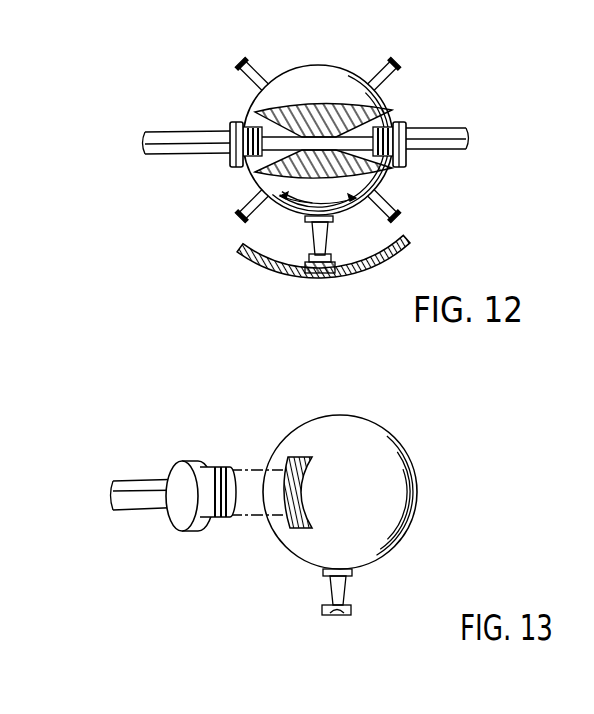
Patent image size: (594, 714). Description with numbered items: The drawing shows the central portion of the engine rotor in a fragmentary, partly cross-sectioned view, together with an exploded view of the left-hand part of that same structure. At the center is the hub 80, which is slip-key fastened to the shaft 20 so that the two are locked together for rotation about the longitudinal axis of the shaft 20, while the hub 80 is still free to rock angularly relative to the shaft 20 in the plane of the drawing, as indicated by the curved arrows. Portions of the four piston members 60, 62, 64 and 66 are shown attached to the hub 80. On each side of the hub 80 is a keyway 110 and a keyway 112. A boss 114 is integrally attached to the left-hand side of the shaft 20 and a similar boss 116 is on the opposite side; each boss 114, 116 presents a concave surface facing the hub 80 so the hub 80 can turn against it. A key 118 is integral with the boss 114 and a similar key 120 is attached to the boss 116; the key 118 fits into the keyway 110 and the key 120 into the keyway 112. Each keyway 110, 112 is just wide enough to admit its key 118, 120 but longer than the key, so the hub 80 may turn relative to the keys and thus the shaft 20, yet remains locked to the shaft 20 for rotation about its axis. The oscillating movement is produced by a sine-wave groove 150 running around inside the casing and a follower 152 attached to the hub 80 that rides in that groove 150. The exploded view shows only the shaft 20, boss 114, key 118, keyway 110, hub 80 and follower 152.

In FIG. 12, the shaft 20 is at (165, 140).
In FIG. 13, the shaft 20 is at (135, 490).
In FIG. 12, the piston member 60 is at (262, 66).
In FIG. 12, the piston member 62 is at (256, 212).
In FIG. 12, the piston member 64 is at (400, 212).
In FIG. 12, the piston member 66 is at (397, 65).
In FIG. 12, the hub 80 is at (320, 78).
In FIG. 13, the hub 80 is at (393, 470).
In FIG. 12, the keyway 110 is at (250, 112).
In FIG. 13, the keyway 110 is at (300, 460).
In FIG. 12, the keyway 112 is at (385, 112).
In FIG. 12, the boss 114 is at (233, 128).
In FIG. 13, the boss 114 is at (182, 465).
In FIG. 12, the boss 116 is at (405, 124).
In FIG. 12, the key 118 is at (248, 160).
In FIG. 13, the key 118 is at (227, 468).
In FIG. 12, the key 120 is at (383, 177).
In FIG. 12, the sine-wave groove 150 is at (313, 280).
In FIG. 12, the follower 152 is at (327, 250).
In FIG. 13, the follower 152 is at (340, 597).